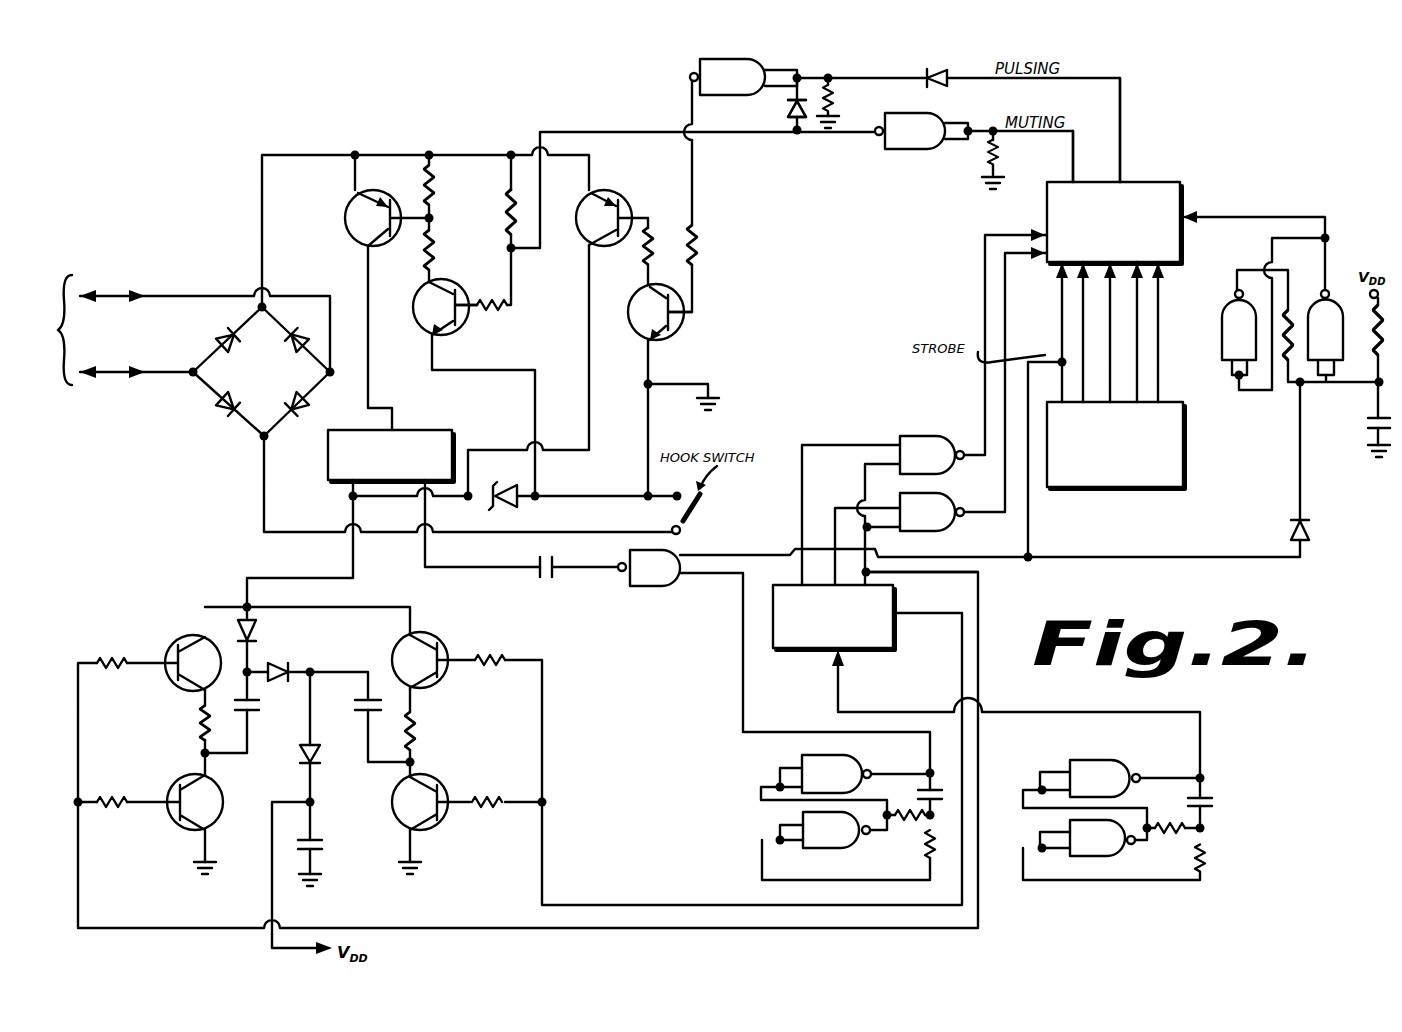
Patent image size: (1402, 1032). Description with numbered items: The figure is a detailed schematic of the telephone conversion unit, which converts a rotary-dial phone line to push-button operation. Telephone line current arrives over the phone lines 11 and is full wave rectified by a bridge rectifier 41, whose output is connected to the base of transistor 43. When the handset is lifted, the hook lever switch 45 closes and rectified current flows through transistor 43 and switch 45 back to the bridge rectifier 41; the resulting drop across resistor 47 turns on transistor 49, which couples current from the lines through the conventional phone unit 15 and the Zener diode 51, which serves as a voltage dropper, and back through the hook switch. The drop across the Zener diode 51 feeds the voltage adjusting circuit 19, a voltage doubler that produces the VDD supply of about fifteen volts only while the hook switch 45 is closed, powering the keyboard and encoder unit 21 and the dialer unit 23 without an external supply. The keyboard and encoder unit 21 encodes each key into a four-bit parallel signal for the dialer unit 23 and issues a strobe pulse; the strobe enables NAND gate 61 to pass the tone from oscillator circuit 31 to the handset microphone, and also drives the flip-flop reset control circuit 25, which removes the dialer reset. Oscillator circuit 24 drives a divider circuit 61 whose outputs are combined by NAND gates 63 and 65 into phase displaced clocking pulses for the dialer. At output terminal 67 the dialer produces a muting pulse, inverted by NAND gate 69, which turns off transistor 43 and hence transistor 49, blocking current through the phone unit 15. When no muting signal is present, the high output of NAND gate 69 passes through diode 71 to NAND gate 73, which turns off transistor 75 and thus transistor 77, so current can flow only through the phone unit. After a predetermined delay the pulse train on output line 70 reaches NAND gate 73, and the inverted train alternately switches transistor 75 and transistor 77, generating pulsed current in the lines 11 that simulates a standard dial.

The phone lines 11 is at (118, 392).
The bridge rectifier 41 is at (286, 391).
The transistor 49 is at (392, 178).
The resistor 47 is at (452, 187).
The transistor 43 is at (452, 278).
The transistor 77 is at (630, 178).
The transistor 75 is at (690, 335).
The NAND gate 73 is at (722, 96).
The diode 71 is at (790, 112).
The NAND gate 69 is at (906, 150).
The output line 70 is at (1122, 141).
The output terminal 67 is at (1086, 182).
The dialer unit 23 is at (1175, 182).
The reset control circuit 25 is at (1363, 232).
The keyboard and encoder unit 21 is at (1175, 447).
The NAND gate 65 is at (946, 404).
The NAND gate 63 is at (948, 528).
The NAND gate / divider circuit 61 is at (866, 663).
The phone unit 15 is at (447, 430).
The Zener diode 51 is at (518, 511).
The hook lever switch 45 is at (690, 516).
The voltage adjusting circuit 19 is at (460, 628).
The oscillator circuit 31 is at (766, 782).
The oscillator circuit 24 is at (1240, 750).